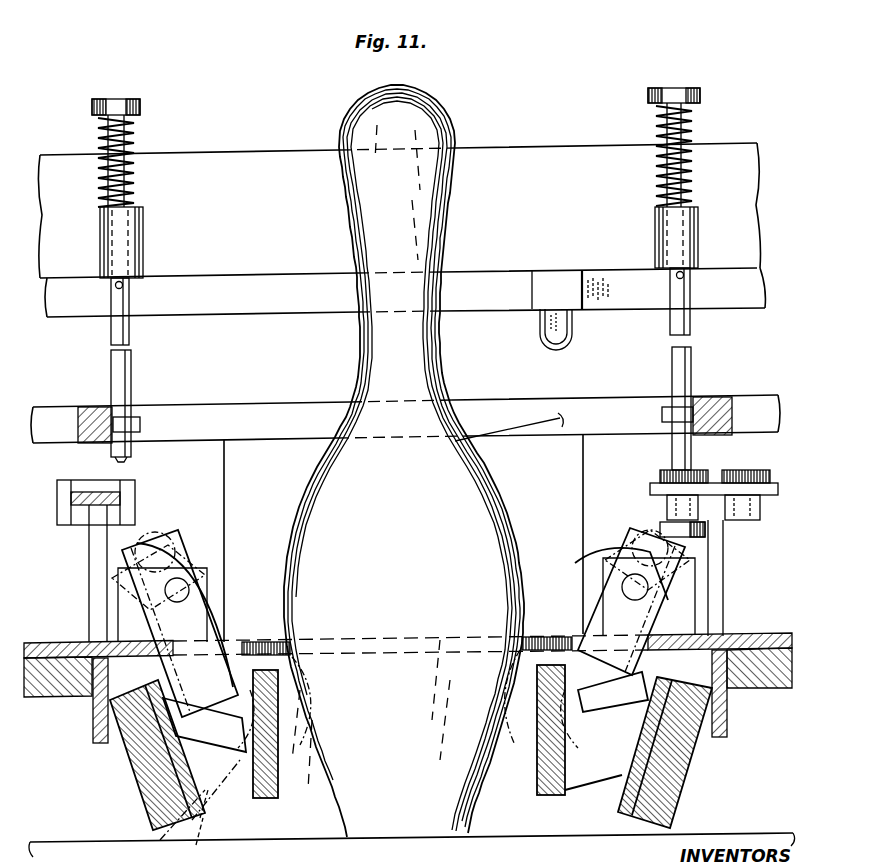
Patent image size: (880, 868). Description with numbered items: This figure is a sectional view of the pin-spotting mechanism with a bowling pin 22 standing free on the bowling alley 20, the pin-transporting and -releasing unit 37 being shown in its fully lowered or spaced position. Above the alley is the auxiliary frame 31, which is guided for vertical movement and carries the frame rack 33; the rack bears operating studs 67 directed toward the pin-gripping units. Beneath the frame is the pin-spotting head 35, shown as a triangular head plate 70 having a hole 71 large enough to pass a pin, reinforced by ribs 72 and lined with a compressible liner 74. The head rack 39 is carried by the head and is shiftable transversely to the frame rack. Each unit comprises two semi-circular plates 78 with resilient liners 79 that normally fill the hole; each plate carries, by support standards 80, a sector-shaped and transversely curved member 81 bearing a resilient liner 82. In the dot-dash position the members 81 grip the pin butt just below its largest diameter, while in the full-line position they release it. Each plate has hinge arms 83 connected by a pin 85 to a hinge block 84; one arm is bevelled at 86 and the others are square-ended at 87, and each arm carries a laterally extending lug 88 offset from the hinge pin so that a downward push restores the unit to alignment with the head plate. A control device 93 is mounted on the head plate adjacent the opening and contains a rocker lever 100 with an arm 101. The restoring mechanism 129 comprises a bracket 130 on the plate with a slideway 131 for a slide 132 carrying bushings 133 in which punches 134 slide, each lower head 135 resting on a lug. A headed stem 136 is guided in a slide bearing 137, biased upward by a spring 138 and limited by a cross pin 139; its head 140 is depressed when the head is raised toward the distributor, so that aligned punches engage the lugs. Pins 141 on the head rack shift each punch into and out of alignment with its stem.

The bowling alley 20 is at (740, 833).
The pins 22 is at (308, 482).
The auxiliary frame 31 is at (563, 148).
The frame rack 33 is at (302, 318).
The pin-spotting head 35 is at (53, 641).
The pin-transporting and -releasing unit 37 is at (265, 806).
The head rack 39 is at (290, 396).
The operating stud 67 is at (575, 332).
The head plate 70 is at (764, 635).
The hole 71 is at (268, 636).
The rib 72 is at (98, 742).
The liner 74 is at (36, 695).
The semi-circular plate 78 is at (204, 820).
The resilient liner 79 is at (150, 802).
The support standard 80 is at (240, 700).
The sector-shaped member 81 is at (266, 752).
The resilient liner 82 is at (278, 797).
The hinge arm 83 is at (208, 618).
The hinge block 84 is at (122, 605).
The pin 85 is at (182, 585).
The bevel 86 is at (180, 538).
The square end 87 is at (174, 516).
The lug 88 is at (640, 520).
The control device 93 is at (222, 468).
The lever 100 is at (484, 432).
The arm 101 is at (556, 418).
The mechanism 129 is at (660, 382).
The bracket 130 is at (92, 571).
The slideway 131 is at (85, 512).
The slide 132 is at (98, 471).
The bushing 133 is at (660, 477).
The punch 134 is at (131, 381).
The lower head 135 is at (703, 532).
The headed stem 136 is at (130, 335).
The slide bearing 137 is at (143, 245).
The spring 138 is at (136, 178).
The cross pin 139 is at (123, 286).
The head 140 is at (126, 99).
The pin 141 is at (140, 424).